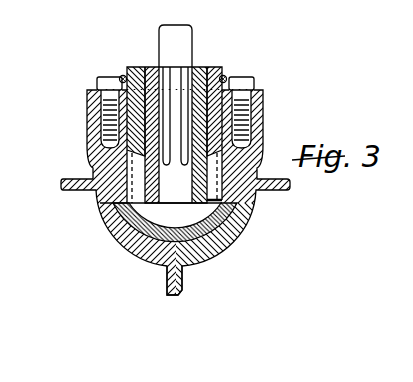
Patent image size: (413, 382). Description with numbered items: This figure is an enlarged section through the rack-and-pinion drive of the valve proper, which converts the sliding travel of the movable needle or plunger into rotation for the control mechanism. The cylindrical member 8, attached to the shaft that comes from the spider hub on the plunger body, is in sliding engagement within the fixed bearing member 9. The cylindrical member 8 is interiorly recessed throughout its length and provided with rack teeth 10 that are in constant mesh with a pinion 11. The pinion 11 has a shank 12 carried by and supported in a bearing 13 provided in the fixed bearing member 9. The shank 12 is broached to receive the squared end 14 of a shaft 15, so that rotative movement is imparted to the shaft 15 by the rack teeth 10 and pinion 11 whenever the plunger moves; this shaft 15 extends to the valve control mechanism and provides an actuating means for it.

The cylindrical member 8 is at (125, 220).
The fixed bearing member 9 is at (228, 247).
The rack teeth 10 is at (217, 184).
The pinion 11 is at (123, 243).
The shank 12 is at (146, 133).
The bearing 13 is at (220, 115).
The squared end 14 is at (138, 83).
The shaft 15 is at (187, 45).